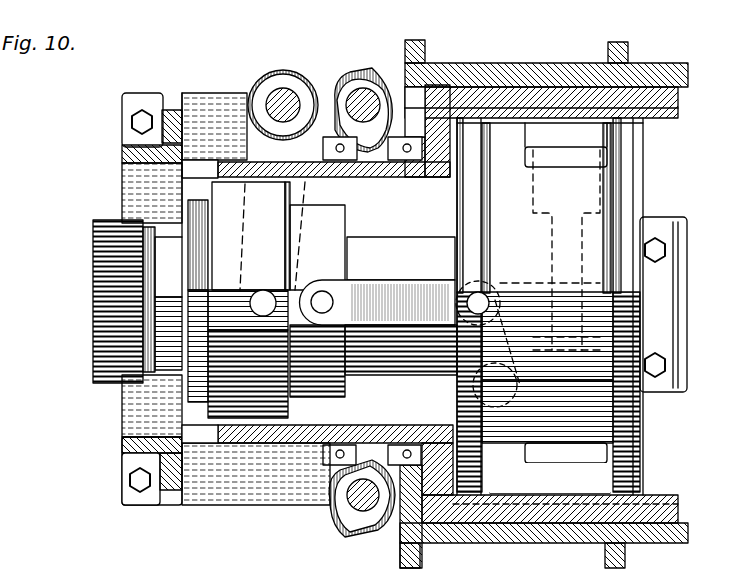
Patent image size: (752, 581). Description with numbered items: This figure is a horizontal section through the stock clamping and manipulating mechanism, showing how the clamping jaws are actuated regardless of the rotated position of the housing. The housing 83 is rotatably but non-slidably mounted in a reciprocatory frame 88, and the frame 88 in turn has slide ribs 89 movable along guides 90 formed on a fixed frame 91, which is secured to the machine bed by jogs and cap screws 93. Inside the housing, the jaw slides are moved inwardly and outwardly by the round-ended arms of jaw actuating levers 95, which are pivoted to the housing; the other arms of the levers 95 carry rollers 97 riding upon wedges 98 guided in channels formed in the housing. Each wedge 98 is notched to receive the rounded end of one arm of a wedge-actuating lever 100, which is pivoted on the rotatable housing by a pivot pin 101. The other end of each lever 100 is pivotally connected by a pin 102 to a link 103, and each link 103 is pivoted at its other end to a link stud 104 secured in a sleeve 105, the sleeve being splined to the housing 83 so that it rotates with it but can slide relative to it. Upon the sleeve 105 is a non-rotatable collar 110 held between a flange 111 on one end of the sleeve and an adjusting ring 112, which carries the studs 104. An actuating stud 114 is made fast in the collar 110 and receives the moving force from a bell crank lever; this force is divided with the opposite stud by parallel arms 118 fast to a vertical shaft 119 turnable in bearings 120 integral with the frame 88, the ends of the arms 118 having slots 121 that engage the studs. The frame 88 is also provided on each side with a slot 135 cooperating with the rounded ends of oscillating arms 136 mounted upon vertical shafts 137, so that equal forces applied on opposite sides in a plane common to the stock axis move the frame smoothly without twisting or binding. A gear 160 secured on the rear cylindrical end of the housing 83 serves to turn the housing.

The housing 83 is at (630, 175).
The reciprocatory frame 88 is at (505, 86).
The slide ribs 89 is at (462, 516).
The guides 90 is at (412, 516).
The fixed frame 91 is at (548, 525).
The cap screws 93 is at (133, 124).
The jaw actuating levers 95 is at (575, 160).
The rollers 97 is at (565, 292).
The wedges 98 is at (562, 252).
The wedge-actuating lever 100 is at (607, 393).
The pivot pin 101 is at (456, 386).
The pin 102 is at (470, 285).
The link 103 is at (380, 300).
The link stud 104 is at (330, 290).
The sleeve 105 is at (200, 268).
The collar 110 is at (270, 210).
The flange 111 is at (198, 222).
The adjusting ring 112 is at (335, 222).
The actuating stud 114 is at (262, 290).
The parallel arms 118 is at (180, 197).
The vertical shaft 119 is at (280, 72).
The bearings 120 is at (247, 152).
The slots 121 is at (185, 375).
The slot 135 is at (407, 178).
The oscillating arms 136 is at (328, 95).
The vertical shafts 137 is at (388, 58).
The gear 160 is at (102, 270).